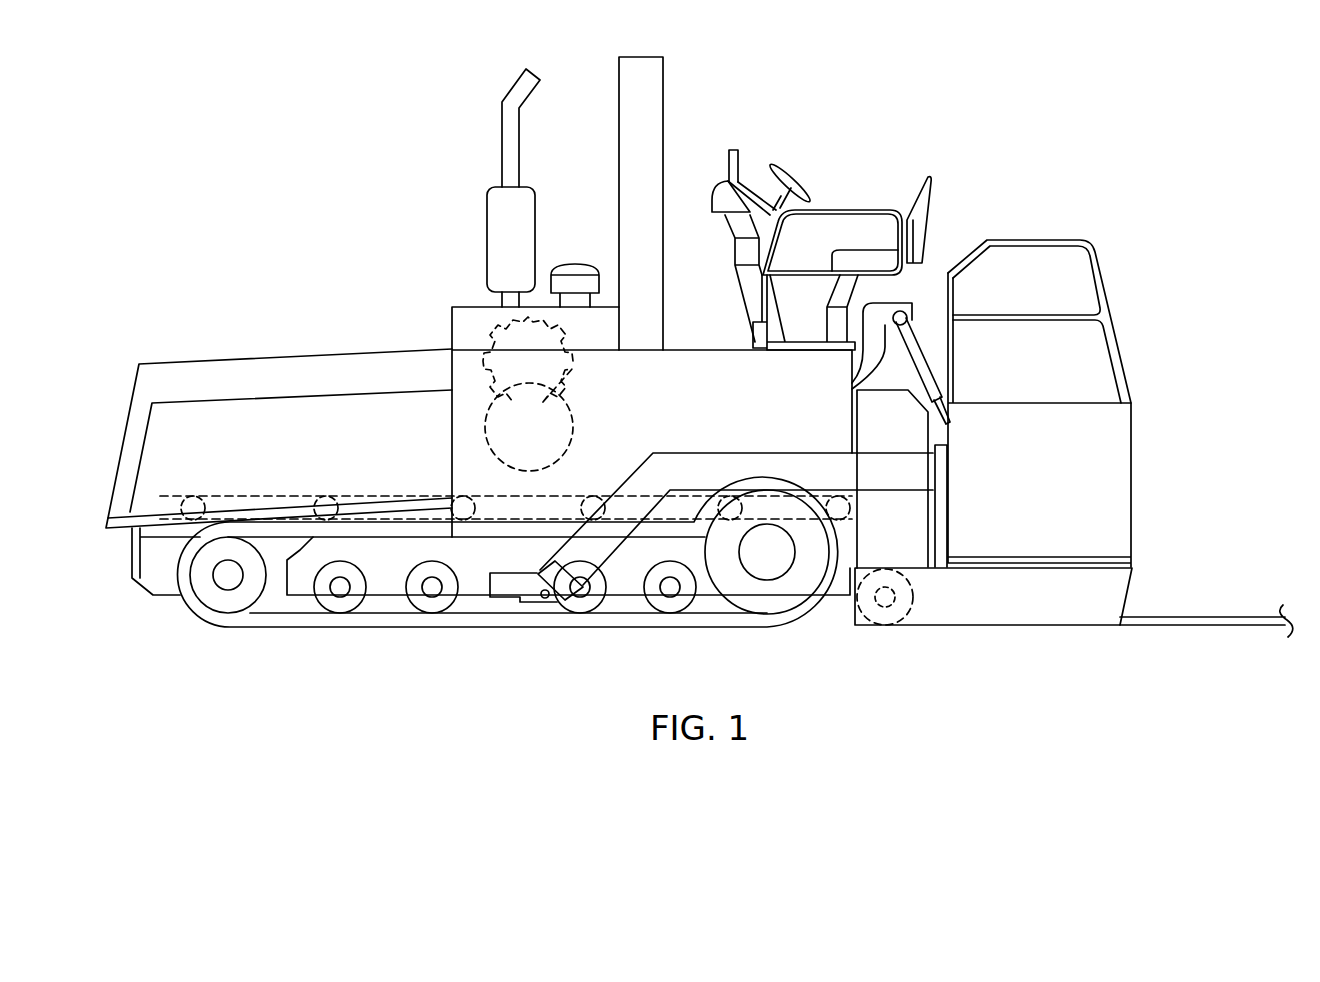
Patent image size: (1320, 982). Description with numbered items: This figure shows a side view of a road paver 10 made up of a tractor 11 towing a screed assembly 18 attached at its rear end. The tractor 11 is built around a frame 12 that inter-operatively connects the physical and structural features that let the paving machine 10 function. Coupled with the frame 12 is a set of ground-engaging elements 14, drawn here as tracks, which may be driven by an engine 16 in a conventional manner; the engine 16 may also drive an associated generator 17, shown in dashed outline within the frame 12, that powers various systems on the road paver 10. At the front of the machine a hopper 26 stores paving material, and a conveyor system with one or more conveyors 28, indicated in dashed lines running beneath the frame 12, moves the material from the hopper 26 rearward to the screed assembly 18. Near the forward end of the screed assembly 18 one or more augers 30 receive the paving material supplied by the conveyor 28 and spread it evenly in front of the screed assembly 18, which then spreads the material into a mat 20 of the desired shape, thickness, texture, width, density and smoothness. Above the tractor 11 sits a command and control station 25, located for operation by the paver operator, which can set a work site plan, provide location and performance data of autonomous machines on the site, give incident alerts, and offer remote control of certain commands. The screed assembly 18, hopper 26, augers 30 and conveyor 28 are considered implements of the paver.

The road paver 10 is at (208, 127).
The tractor 11 is at (190, 196).
The frame 12 is at (725, 348).
The ground-engaging elements 14 is at (378, 627).
The engine 16 is at (577, 372).
The generator 17 is at (573, 425).
The screed assembly 18 is at (1116, 194).
The mat 20 is at (1205, 625).
The command and control station 25 is at (816, 153).
The hopper 26 is at (295, 355).
The conveyor 28 is at (260, 497).
The auger 30 is at (882, 620).